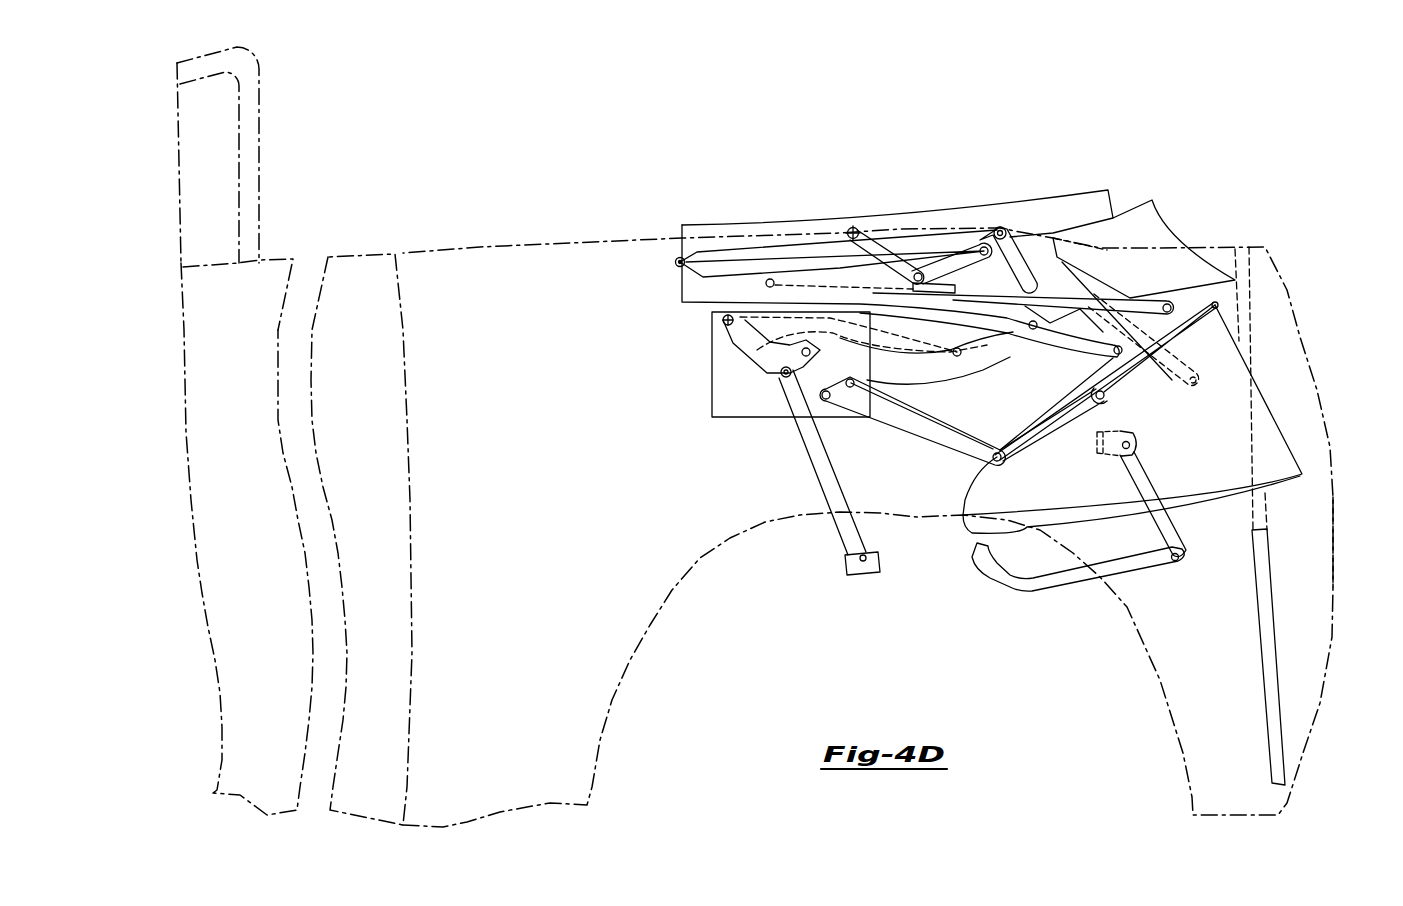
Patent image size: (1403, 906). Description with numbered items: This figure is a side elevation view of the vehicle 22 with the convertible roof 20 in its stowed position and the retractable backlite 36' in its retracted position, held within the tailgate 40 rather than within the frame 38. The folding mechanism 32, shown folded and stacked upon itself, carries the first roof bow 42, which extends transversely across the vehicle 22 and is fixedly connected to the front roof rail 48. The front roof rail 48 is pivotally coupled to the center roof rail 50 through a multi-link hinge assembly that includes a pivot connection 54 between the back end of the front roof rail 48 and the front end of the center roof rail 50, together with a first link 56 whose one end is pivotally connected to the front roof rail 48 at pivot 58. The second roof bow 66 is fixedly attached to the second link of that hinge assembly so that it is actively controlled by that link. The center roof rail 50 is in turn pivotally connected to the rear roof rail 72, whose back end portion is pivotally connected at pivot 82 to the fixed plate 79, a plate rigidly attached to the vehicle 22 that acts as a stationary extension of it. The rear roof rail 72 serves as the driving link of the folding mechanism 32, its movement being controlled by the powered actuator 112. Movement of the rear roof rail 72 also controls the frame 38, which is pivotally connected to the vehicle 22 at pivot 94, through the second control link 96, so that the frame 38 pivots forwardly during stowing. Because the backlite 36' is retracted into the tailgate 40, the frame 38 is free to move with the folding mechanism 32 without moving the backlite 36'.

The convertible roof 20 is at (986, 180).
The vehicle 22 is at (590, 770).
The folding mechanism 32 is at (792, 196).
The backlite 36' is at (1284, 657).
The frame 38 is at (1262, 424).
The tailgate 40 is at (1317, 513).
The first roof bow 42 is at (1157, 233).
The front roof rail 48 is at (1072, 207).
The center roof rail 50 is at (692, 297).
The pivot connection 54 is at (675, 262).
The first link 56 is at (902, 245).
The pivot 58 is at (855, 229).
The second roof bow 66 is at (1017, 250).
The rear roof rail 72 is at (995, 335).
The fixed plate 79 is at (745, 410).
The pivot 82 is at (723, 320).
The pivot 94 is at (1218, 305).
The second control link 96 is at (1063, 587).
The powered actuator 112 is at (827, 487).